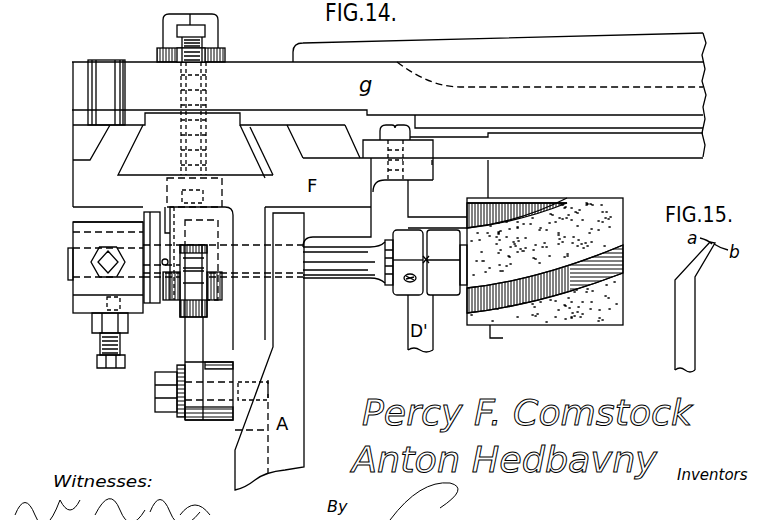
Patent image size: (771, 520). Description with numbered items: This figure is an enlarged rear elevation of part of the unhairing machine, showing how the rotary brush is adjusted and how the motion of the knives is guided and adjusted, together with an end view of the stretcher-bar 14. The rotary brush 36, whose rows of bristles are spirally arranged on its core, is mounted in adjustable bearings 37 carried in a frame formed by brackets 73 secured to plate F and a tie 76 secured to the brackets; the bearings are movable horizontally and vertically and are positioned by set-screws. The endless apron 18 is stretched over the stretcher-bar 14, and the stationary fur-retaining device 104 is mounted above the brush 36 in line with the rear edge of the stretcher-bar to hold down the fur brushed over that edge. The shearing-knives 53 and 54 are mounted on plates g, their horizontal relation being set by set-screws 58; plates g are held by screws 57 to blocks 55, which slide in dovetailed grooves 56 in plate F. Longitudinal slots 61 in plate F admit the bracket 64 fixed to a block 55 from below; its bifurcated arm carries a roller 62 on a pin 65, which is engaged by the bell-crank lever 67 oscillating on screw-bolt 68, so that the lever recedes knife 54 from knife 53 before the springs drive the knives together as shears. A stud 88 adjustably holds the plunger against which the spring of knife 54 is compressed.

In FIG. 14, the screws 57 is at (201, 38).
In FIG. 14, the set-screws 58 is at (221, 37).
In FIG. 14, the stud 88 is at (106, 92).
In FIG. 14, the blocks 55 is at (156, 155).
In FIG. 14, the dovetailed grooves 56 is at (254, 141).
In FIG. 14, the longitudinal slots 61 is at (222, 192).
In FIG. 14, the brackets 73 is at (83, 213).
In FIG. 14, the adjustable bearings 37 is at (95, 263).
In FIG. 14, the tie 76 is at (98, 305).
In FIG. 14, the rollers 62 is at (183, 302).
In FIG. 14, the bracket 64 is at (190, 260).
In FIG. 14, the pins 65 is at (228, 286).
In FIG. 14, the bell-crank lever 67 is at (194, 368).
In FIG. 14, the screw-bolts 68 is at (163, 378).
In FIG. 14, the shearing-knife 54 is at (692, 122).
In FIG. 14, the shearing-knife 53 is at (702, 128).
In FIG. 14, the stationary fur-retaining device 104 is at (588, 150).
In FIG. 14, the endless apron 18 is at (488, 180).
In FIG. 14, the rotary brush 36 is at (545, 261).
In FIG. 15, the stretcher-bar 14 is at (695, 307).